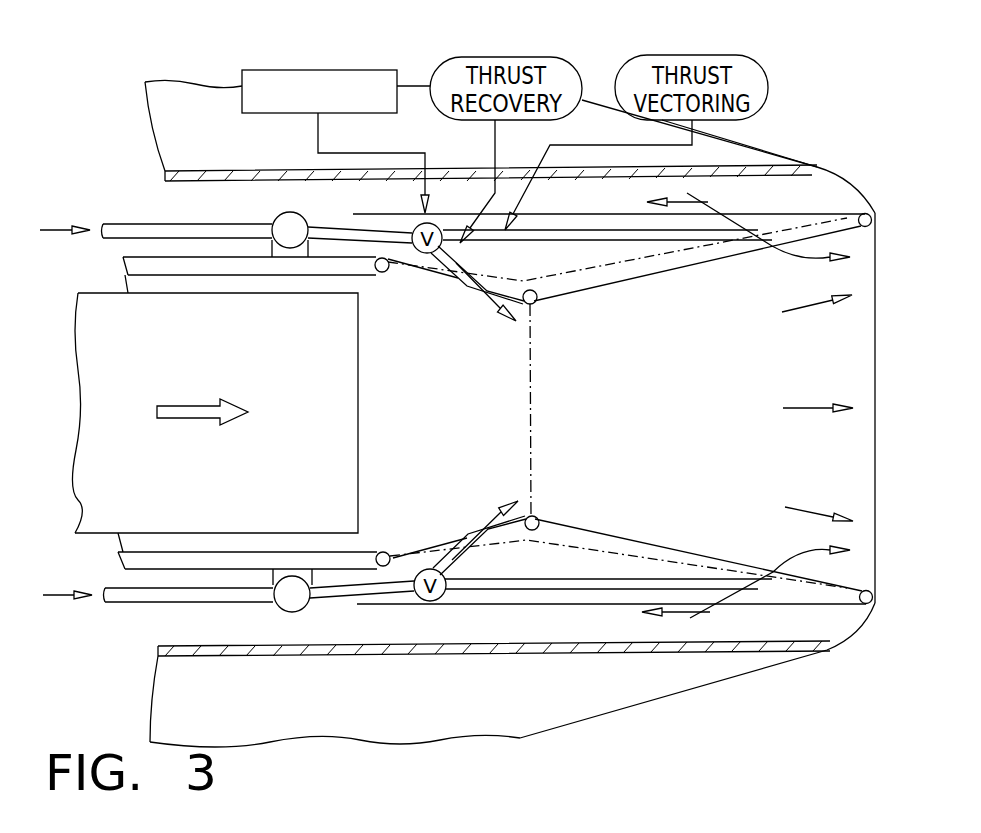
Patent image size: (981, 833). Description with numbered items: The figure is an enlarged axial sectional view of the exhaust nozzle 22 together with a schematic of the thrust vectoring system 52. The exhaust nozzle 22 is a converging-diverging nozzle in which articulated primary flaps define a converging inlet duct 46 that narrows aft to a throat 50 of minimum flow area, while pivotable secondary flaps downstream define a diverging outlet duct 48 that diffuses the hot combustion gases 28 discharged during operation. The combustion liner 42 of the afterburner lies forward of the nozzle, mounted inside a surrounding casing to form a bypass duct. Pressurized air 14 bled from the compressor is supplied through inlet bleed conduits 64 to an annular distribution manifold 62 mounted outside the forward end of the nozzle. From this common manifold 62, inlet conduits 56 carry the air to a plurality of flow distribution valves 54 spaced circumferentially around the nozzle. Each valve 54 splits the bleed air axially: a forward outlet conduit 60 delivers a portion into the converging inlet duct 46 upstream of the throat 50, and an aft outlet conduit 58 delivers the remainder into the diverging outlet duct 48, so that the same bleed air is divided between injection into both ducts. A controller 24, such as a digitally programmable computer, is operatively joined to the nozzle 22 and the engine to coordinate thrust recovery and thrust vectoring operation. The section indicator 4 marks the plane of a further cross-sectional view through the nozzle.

The section line for view of FIG. 4 is at (664, 412).
The pressurized air 14 is at (55, 230).
The exhaust nozzle 22 is at (505, 641).
The controller 24 is at (310, 70).
The hot combustion gases 28 is at (192, 404).
The tubular combustion liner 42 is at (110, 292).
The converging inlet duct 46 is at (462, 448).
The diverging outlet duct 48 is at (725, 434).
The throat 50 is at (534, 514).
The thrust vectoring system 52 is at (780, 52).
The flow distribution valves 54 is at (417, 262).
The inlet conduits 56 is at (371, 226).
The outlet conduits 58 is at (563, 235).
The forward outlet conduit 60 is at (452, 270).
The annular distribution manifold 62 is at (283, 213).
The inlet bleed conduits 64 is at (153, 222).